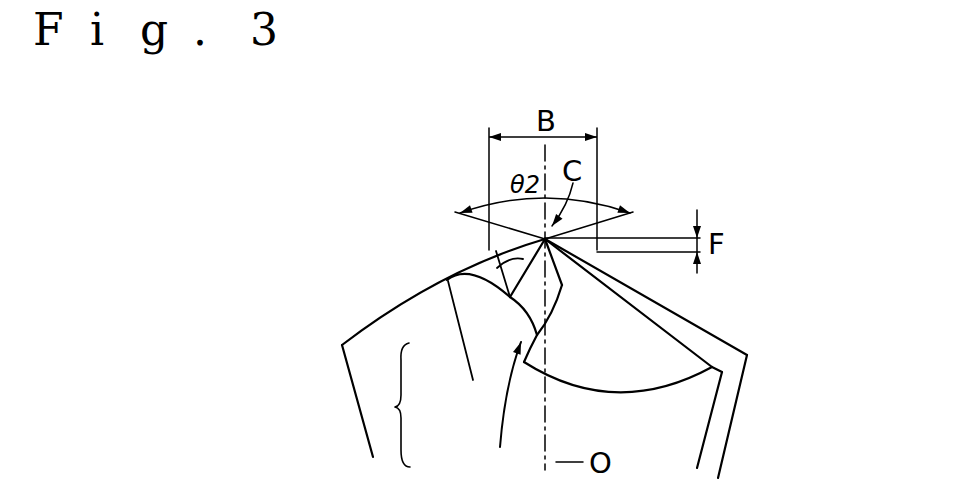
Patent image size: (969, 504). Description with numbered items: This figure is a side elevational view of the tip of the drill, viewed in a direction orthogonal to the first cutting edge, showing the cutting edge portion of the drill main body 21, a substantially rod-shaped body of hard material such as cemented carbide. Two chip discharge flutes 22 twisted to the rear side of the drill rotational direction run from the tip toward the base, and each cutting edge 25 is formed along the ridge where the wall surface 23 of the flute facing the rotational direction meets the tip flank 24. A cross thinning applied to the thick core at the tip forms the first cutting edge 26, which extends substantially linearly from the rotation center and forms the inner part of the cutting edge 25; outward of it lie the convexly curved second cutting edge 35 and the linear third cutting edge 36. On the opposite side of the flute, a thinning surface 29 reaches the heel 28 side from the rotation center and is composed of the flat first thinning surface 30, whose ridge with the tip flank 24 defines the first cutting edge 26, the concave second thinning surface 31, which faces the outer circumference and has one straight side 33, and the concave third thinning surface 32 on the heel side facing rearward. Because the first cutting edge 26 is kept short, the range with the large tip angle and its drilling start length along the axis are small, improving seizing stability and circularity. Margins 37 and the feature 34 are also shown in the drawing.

The drill main body 21 is at (752, 465).
The chip discharge flute 22 is at (372, 378).
The wall surface 23 is at (365, 358).
The tip flank 24 is at (642, 352).
The cutting edge 25 is at (440, 214).
The first cutting edge 26 is at (512, 239).
The heel 28 is at (517, 432).
The thinning surface 29 is at (386, 405).
The first thinning surface 30 is at (458, 302).
The second thinning surface 31 is at (473, 380).
The third thinning surface 32 is at (510, 297).
The straight side of second thinning surface 33 is at (563, 273).
The rake face 34 is at (530, 329).
The second cutting edge 35 is at (448, 279).
The third cutting edge 36 is at (377, 323).
The margin 37 is at (365, 443).